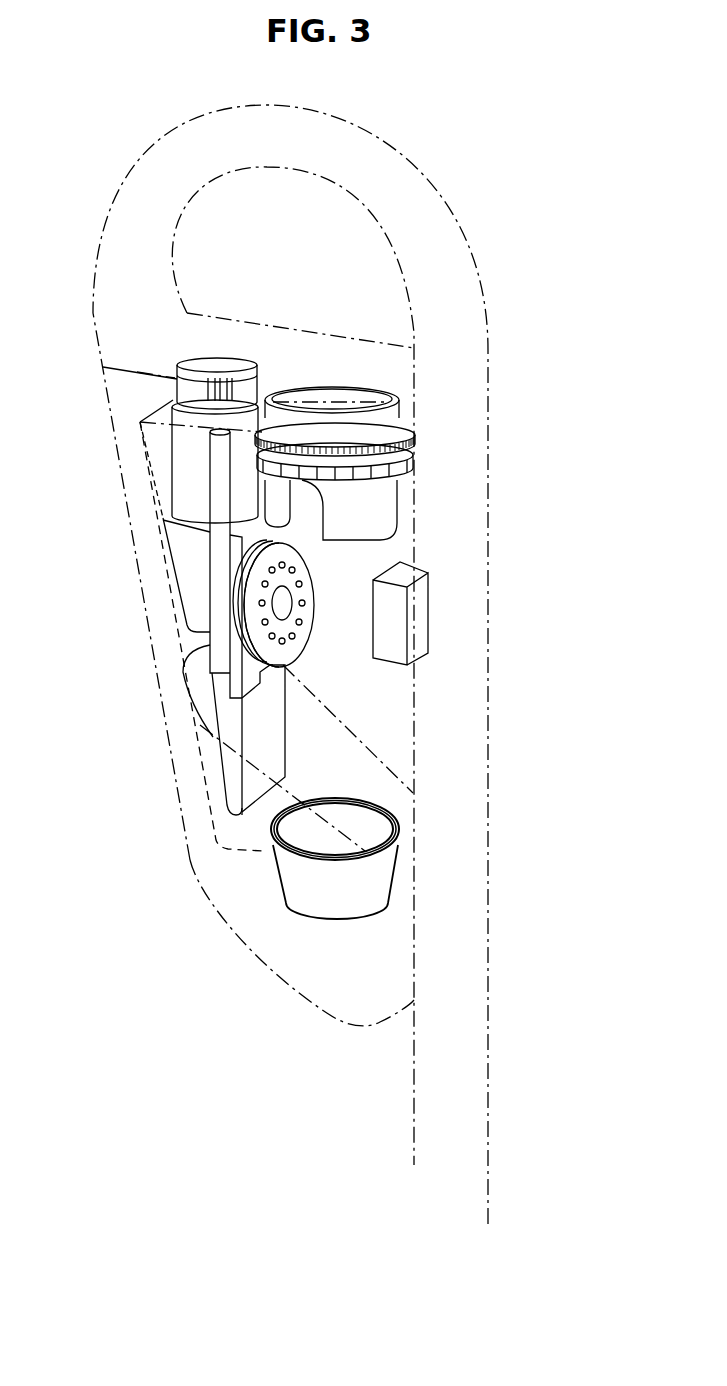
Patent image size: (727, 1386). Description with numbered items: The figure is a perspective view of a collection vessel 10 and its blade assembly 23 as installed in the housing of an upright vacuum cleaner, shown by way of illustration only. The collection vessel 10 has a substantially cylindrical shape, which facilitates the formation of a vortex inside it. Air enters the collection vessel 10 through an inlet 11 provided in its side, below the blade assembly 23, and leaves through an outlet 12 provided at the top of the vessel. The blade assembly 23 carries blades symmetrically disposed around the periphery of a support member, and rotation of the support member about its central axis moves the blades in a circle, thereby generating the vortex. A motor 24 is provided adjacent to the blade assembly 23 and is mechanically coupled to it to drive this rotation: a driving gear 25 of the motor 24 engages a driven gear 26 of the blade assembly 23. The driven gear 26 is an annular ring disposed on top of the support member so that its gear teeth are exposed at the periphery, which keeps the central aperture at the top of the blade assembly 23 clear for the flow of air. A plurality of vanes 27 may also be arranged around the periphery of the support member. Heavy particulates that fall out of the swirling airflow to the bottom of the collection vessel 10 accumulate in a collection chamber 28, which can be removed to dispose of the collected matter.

The collection vessel 10 is at (360, 720).
The inlet 11 is at (422, 610).
The outlet 12 is at (317, 417).
The blade assembly 23 is at (400, 505).
The motor 24 is at (183, 460).
The driving gear 25 is at (177, 390).
The driven gear 26 is at (412, 420).
The vanes 27 is at (413, 462).
The collection chamber 28 is at (360, 885).